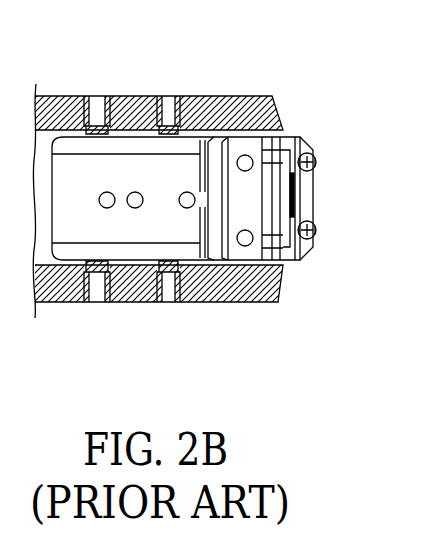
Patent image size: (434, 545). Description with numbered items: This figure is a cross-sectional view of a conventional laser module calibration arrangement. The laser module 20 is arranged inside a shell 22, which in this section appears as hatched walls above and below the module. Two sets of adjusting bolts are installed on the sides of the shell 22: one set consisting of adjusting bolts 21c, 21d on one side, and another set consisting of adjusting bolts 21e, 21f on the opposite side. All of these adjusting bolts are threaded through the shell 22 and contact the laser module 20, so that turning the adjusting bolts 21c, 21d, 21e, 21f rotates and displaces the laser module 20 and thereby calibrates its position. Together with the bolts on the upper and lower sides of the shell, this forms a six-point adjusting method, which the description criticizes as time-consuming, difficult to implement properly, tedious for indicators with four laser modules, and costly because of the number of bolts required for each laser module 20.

The laser module 20 is at (307, 195).
The adjusting bolt 21c is at (94, 88).
The adjusting bolt 21d is at (167, 88).
The adjusting bolt 21e is at (93, 306).
The adjusting bolt 21f is at (166, 306).
The shell 22 is at (240, 88).